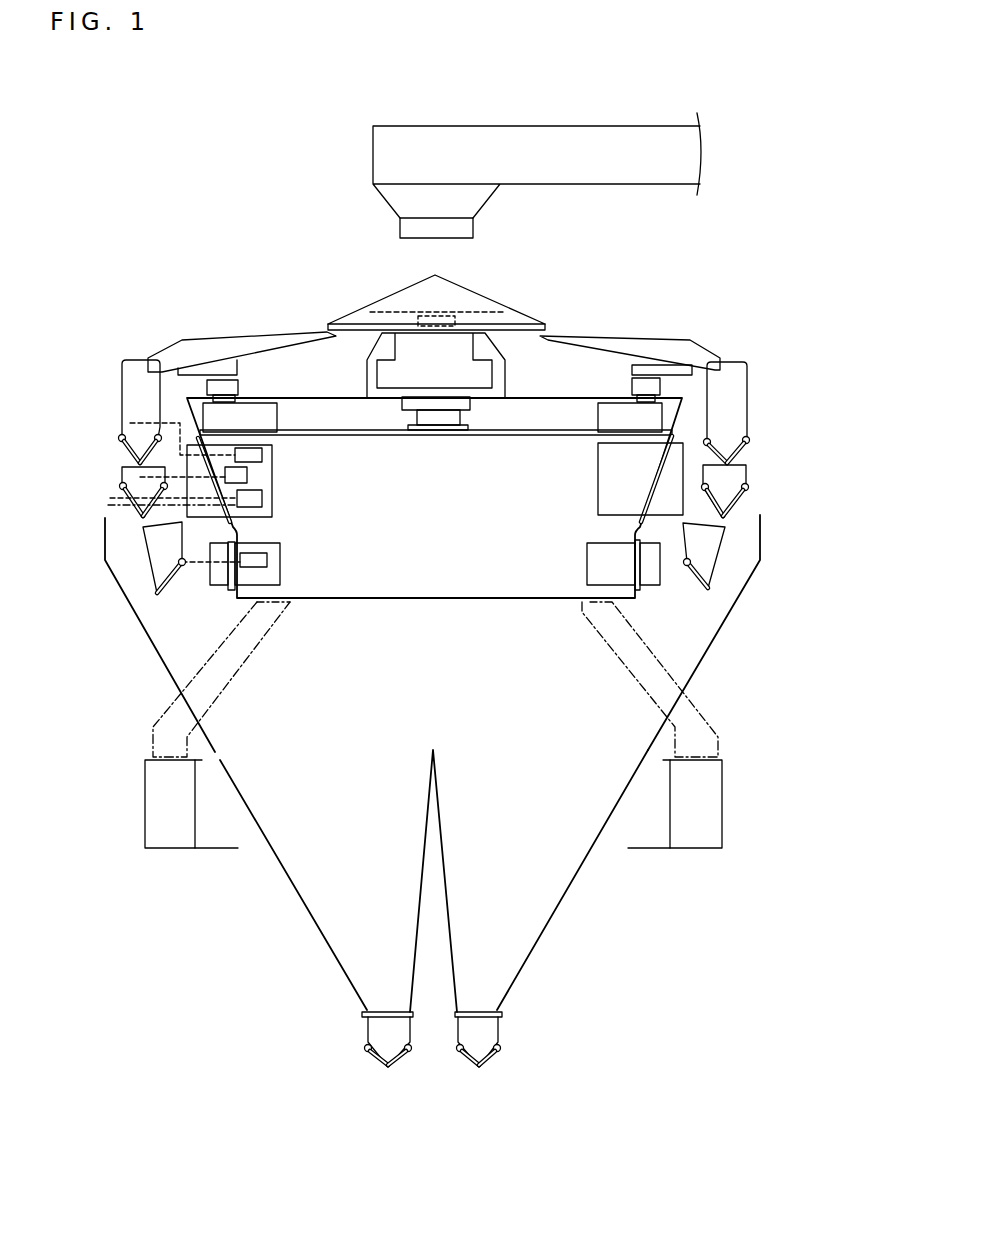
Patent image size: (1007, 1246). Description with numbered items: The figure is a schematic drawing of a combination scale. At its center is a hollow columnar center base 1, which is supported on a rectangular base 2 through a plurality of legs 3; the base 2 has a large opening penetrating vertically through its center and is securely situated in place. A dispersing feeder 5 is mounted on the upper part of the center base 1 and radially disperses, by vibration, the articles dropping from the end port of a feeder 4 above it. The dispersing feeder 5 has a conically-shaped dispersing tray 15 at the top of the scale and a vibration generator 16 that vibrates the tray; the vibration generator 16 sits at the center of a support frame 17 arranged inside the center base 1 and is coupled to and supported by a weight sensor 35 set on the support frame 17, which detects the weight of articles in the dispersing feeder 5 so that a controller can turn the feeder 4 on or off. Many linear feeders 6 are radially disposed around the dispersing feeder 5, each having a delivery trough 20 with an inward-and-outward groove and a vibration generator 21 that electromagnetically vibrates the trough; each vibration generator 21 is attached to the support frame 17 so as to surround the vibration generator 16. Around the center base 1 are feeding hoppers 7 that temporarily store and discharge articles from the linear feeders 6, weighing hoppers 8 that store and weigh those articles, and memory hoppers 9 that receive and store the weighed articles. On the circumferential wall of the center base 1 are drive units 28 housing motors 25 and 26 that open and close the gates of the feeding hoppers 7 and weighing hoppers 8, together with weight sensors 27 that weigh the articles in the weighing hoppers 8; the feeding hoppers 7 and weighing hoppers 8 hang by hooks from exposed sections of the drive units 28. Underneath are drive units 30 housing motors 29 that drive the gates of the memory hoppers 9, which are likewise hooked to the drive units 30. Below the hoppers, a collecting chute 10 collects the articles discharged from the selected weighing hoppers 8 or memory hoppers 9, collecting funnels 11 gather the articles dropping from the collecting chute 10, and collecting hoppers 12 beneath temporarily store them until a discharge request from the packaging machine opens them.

The center base 1 is at (490, 600).
The base 2 is at (145, 801).
The legs 3 is at (150, 723).
The feeder 4 is at (450, 125).
The dispersing feeder 5 is at (436, 287).
The linear feeders 6 is at (434, 323).
The feeding hoppers 7 is at (122, 392).
The weighing hoppers 8 is at (122, 480).
The memory hoppers 9 is at (150, 548).
The collecting chute 10 is at (162, 660).
The collecting funnels 11 is at (318, 916).
The collecting hoppers 12 is at (367, 1033).
The dispersing tray 15 is at (400, 300).
The vibration generator 16 is at (478, 378).
The support frame 17 is at (541, 437).
The delivery trough 20 is at (185, 338).
The vibration generator 21 is at (278, 419).
The motor 25 is at (262, 455).
The motor 26 is at (262, 500).
The weight sensor 27 is at (247, 475).
The drive units 28 is at (435, 485).
The motor 29 is at (267, 562).
The drive units 30 is at (421, 564).
The weight sensor 35 is at (435, 422).